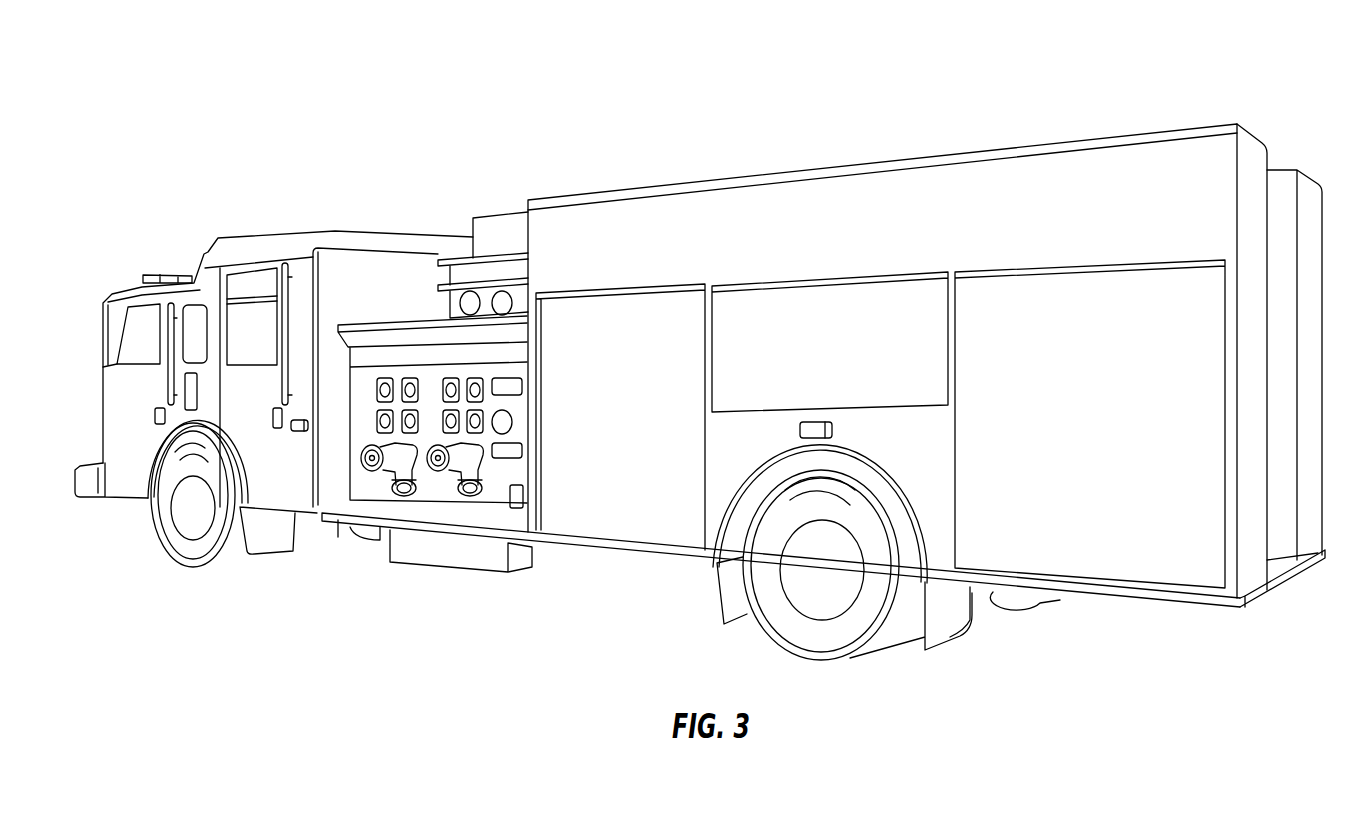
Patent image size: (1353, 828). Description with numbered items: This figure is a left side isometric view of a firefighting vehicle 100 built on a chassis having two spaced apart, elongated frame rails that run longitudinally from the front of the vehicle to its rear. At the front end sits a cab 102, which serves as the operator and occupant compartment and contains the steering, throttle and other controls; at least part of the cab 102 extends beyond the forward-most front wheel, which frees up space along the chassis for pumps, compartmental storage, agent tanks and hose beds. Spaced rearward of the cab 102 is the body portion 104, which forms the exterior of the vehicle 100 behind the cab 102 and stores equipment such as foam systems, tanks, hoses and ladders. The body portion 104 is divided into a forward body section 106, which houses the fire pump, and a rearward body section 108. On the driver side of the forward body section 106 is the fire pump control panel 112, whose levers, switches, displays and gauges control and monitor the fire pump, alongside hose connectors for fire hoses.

The firefighting vehicle 100 is at (558, 148).
The cab 102 is at (242, 250).
The body portion 104 is at (1243, 113).
The forward body section 106 is at (350, 540).
The rearward body section 108 is at (678, 565).
The fire pump control panel 112 is at (433, 495).